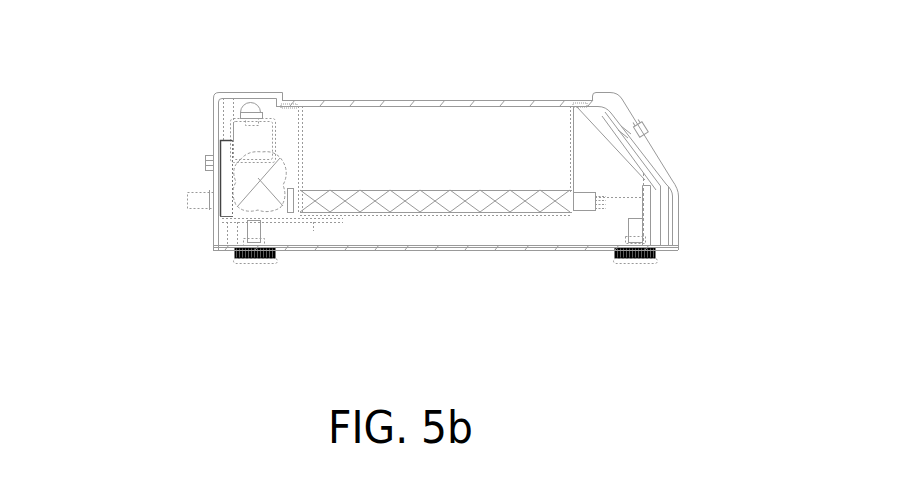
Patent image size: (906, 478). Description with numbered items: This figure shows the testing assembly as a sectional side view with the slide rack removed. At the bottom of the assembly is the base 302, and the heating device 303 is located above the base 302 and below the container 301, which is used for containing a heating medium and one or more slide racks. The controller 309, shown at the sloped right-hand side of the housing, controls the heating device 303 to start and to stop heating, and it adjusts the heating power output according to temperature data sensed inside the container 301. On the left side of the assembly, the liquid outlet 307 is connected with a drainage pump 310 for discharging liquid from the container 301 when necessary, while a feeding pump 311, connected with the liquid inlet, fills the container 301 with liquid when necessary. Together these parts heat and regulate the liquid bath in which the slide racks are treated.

The container 301 is at (303, 120).
The base 302 is at (313, 248).
The heating device 303 is at (357, 205).
The liquid outlet 307 is at (198, 202).
The controller 309 is at (643, 140).
The drainage pump 310 is at (247, 130).
The feeding pump 311 is at (247, 169).